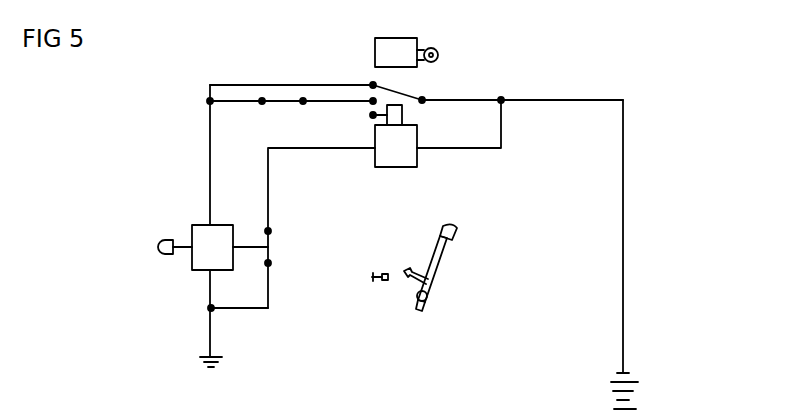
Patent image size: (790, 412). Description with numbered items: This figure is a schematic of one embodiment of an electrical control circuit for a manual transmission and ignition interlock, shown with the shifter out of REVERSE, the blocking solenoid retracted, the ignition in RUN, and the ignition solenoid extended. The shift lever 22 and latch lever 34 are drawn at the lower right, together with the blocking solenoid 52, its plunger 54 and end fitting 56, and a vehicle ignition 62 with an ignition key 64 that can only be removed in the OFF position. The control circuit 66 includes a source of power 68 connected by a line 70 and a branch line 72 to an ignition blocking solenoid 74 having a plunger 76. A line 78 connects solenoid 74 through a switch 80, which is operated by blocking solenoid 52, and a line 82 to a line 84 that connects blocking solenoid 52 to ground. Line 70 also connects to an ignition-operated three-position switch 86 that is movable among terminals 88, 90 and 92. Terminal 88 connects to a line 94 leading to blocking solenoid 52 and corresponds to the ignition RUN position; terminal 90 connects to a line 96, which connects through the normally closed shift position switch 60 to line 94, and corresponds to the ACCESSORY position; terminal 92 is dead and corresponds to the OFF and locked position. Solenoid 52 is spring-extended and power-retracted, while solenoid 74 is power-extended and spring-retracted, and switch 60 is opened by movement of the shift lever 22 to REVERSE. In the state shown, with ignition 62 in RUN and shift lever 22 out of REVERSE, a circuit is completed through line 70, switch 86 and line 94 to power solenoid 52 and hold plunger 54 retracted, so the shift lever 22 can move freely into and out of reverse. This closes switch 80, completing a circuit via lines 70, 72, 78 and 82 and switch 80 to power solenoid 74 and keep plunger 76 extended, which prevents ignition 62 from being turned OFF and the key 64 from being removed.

The shift lever 22 is at (447, 250).
The latch lever 34 is at (404, 276).
The blocking solenoid 52 is at (208, 225).
The plunger 54 is at (180, 250).
The sensor 56 is at (157, 243).
The shift position switch 60 is at (278, 102).
The vehicle ignition 62 is at (412, 38).
The ignition key 64 is at (440, 52).
The control circuit 66 is at (620, 92).
The source of power 68 is at (634, 392).
The line 70 is at (623, 123).
The branch line 72 is at (443, 149).
The ignition blocking solenoid 74 is at (394, 168).
The plunger 76 is at (402, 108).
The line 78 is at (268, 195).
The switch 80 is at (268, 255).
The line 82 is at (245, 309).
The line 84 is at (210, 332).
The ignition-operated three-position switch 86 is at (422, 92).
The terminal 88 is at (373, 84).
The terminal 90 is at (372, 100).
The terminal 92 is at (373, 116).
The line 94 is at (240, 85).
The line 96 is at (340, 102).